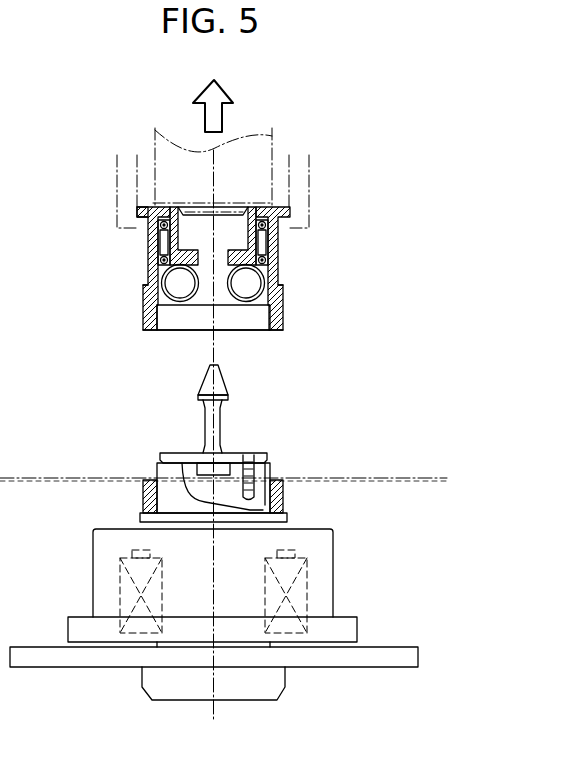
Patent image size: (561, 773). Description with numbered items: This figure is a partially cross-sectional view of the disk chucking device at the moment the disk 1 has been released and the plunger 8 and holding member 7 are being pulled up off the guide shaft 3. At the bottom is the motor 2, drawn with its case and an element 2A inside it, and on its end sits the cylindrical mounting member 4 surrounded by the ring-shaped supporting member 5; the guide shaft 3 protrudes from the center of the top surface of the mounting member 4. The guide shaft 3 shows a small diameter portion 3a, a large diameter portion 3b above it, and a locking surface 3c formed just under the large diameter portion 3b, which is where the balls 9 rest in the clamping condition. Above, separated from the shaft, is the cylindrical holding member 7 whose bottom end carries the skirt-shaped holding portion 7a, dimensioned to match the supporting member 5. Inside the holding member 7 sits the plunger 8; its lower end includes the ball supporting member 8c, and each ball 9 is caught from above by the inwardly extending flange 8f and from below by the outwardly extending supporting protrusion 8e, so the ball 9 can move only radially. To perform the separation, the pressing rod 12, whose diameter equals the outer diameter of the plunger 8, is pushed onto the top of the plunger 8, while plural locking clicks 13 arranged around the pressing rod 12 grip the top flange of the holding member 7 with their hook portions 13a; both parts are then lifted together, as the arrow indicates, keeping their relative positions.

The disk 1 is at (412, 478).
The motor 2 is at (218, 614).
The magnet 2A is at (325, 598).
The guide shaft 3 is at (225, 402).
The small diameter portion 3a is at (250, 386).
The large diameter portion 3b is at (198, 396).
The locking surface 3c is at (203, 408).
The mounting member 4 is at (150, 497).
The supporting member 5 is at (283, 500).
The holding member 7 is at (195, 239).
The holding portion 7a is at (283, 315).
The plunger 8 is at (200, 239).
The ball supporting member 8c is at (253, 312).
The supporting protrusion 8e is at (172, 307).
The flange 8f is at (163, 246).
The ball 9 is at (250, 280).
The pressing rod 12 is at (155, 150).
The locking click 13 is at (303, 172).
The hook portion 13a is at (140, 222).